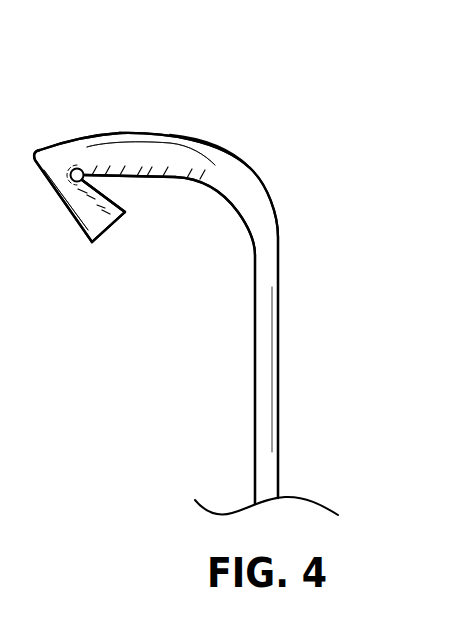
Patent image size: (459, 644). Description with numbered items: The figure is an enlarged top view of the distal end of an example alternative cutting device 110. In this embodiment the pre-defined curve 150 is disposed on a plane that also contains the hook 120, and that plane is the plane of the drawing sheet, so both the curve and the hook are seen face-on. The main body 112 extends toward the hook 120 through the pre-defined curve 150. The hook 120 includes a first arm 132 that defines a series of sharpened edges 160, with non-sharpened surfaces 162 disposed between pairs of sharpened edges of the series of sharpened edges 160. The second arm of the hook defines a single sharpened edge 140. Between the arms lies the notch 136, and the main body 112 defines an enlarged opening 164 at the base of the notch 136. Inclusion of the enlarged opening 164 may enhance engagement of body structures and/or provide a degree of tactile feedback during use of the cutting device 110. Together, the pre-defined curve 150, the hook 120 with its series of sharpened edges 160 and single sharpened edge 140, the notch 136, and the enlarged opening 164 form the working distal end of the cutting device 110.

The cutting device 110 is at (92, 71).
The main body 112 is at (278, 347).
The hook 120 is at (176, 224).
The first arm 132 is at (223, 160).
The notch 136 is at (141, 225).
The single sharpened edge 140 is at (86, 201).
The pre-defined curve 150 is at (281, 184).
The series of sharpened edges 160 is at (134, 152).
The non-sharpened surfaces 162 is at (140, 172).
The enlarged opening 164 is at (68, 152).